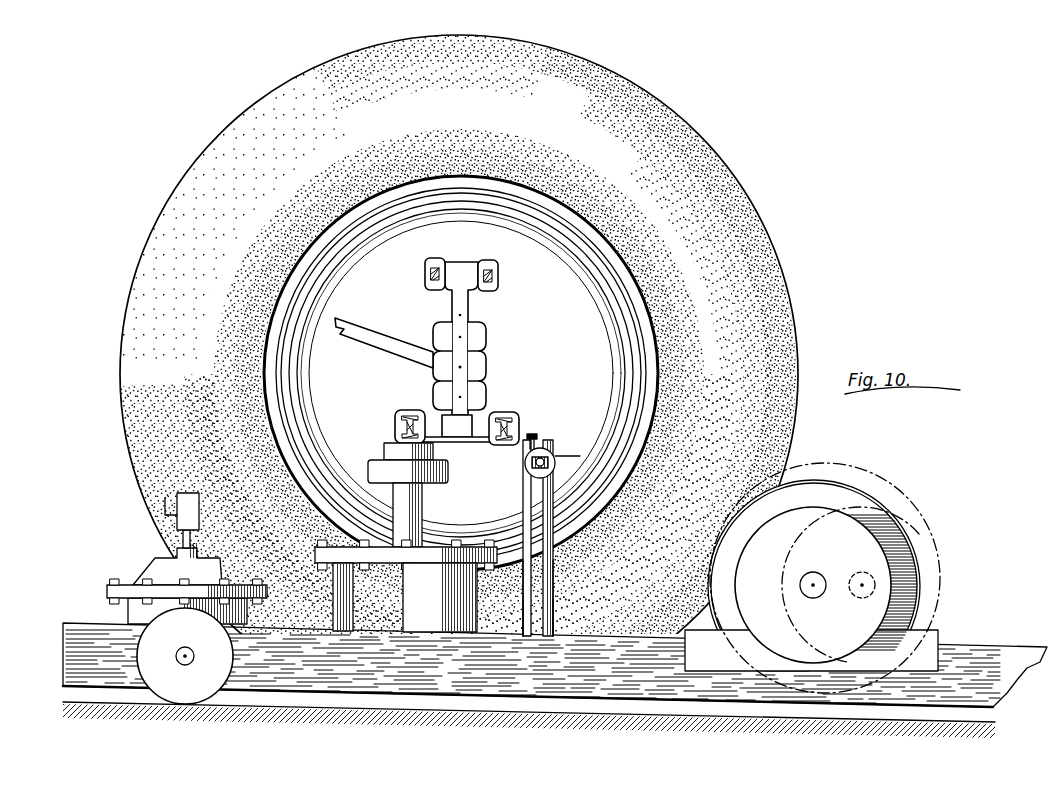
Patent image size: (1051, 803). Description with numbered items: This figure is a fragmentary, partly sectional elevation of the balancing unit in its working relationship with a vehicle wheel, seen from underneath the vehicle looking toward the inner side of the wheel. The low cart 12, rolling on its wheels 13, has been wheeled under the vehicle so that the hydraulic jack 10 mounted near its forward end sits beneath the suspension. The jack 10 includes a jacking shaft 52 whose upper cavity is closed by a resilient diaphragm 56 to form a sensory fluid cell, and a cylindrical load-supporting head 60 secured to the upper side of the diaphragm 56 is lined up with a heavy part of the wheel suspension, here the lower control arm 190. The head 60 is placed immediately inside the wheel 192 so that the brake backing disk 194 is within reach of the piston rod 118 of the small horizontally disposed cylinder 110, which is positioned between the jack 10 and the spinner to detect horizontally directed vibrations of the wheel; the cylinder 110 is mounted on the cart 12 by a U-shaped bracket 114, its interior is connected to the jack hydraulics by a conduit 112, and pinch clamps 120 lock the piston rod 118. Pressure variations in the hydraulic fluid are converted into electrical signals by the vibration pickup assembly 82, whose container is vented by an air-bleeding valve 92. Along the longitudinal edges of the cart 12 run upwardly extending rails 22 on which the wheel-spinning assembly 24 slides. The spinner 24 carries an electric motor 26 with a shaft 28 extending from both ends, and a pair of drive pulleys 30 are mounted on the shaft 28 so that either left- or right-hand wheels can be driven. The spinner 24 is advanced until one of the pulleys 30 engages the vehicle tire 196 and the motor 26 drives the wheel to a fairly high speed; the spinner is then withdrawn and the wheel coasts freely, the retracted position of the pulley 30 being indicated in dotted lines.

The hydraulic jack 10 is at (305, 605).
The low cart 12 is at (535, 683).
The wheels 13 is at (200, 690).
The rails 22 is at (596, 626).
The wheel-spinning assembly 24 is at (921, 553).
The electric motor 26 is at (860, 497).
The shaft 28 is at (813, 599).
The drive pulleys 30 is at (868, 523).
The jacking shaft 52 is at (424, 512).
The resilient diaphragm 56 is at (458, 470).
The load-supporting head 60 is at (386, 452).
The vibration pickup assembly 82 is at (120, 611).
The air-bleeding valve 92 is at (222, 486).
The horizontally disposed cylinder 110 is at (566, 458).
The conduit 112 is at (553, 546).
The U-shaped bracket 114 is at (553, 582).
The piston rod 118 is at (557, 473).
The pinch clamps 120 is at (535, 448).
The lower control arm 190 is at (506, 407).
The wheel 192 is at (791, 239).
The brake backing disk 194 is at (575, 308).
The vehicle tire 196 is at (760, 300).